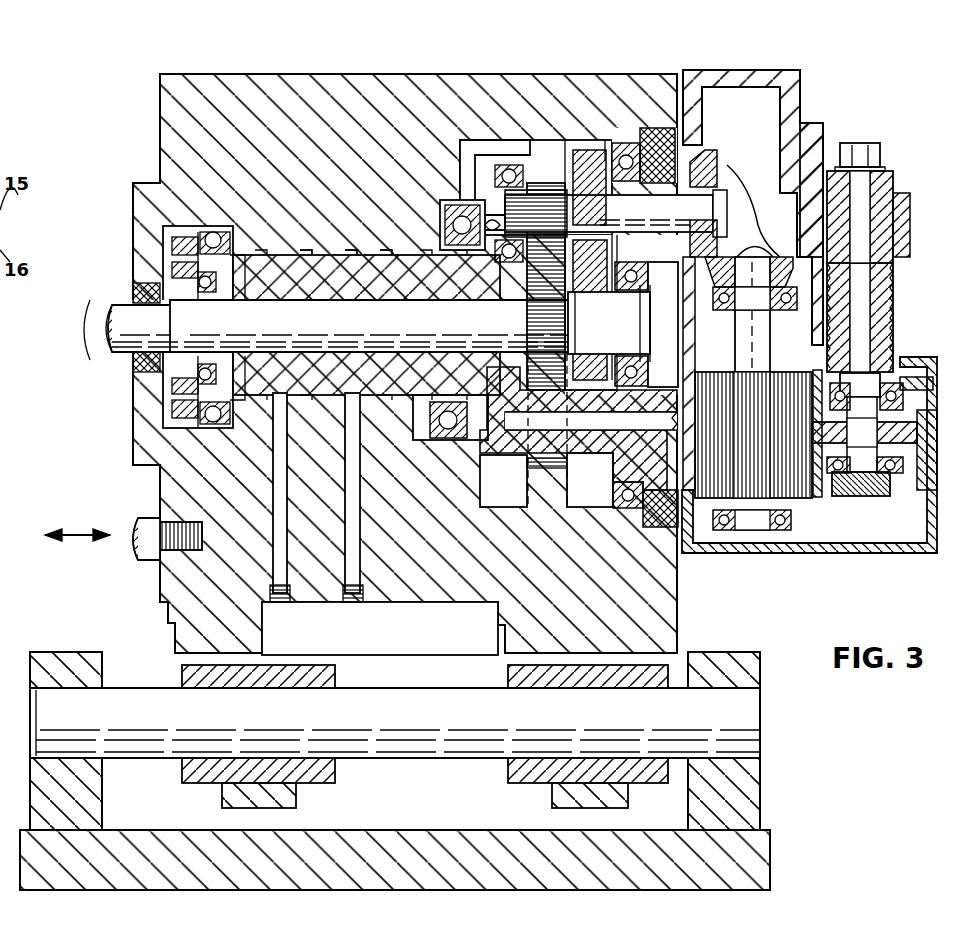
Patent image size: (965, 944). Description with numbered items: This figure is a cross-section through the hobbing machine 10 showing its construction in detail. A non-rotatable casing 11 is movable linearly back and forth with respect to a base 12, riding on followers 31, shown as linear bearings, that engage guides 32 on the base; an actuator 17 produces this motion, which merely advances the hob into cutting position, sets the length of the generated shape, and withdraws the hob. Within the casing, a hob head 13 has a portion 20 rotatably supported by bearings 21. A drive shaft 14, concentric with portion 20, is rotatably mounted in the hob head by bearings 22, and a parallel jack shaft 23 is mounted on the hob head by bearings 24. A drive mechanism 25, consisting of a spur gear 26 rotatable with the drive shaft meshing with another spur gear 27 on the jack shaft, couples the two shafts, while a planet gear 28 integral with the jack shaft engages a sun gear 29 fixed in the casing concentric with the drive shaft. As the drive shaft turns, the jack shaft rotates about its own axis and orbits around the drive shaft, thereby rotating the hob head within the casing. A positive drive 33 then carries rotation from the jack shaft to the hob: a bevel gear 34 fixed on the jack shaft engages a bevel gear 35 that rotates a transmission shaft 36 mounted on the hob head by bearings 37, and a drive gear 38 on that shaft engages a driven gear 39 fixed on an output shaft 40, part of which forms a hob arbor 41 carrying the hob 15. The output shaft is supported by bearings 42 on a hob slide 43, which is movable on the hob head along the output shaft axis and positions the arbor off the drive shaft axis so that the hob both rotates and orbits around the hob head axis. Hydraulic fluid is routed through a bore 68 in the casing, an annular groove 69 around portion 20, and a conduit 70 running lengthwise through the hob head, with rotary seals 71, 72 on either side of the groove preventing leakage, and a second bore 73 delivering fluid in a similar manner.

The hobbing machine 10 is at (252, 68).
The casing 11 is at (160, 130).
The base 12 is at (770, 860).
The hob head 13 is at (800, 70).
The drive shaft 14 is at (120, 352).
The hob 15 is at (895, 305).
The actuator 17 is at (150, 556).
The portion of the hob head 20 is at (512, 460).
The bearings 21 is at (232, 422).
The bearings 22 is at (190, 280).
The jack shaft 23 is at (648, 214).
The bearings 24 is at (478, 180).
The drive mechanism 25 is at (572, 140).
The spur gear 26 is at (640, 324).
The spur gear 27 is at (615, 150).
The planet gear 28 is at (535, 185).
The sun gear 29 is at (568, 463).
The followers 31 is at (310, 783).
The guides 32 is at (462, 760).
The positive drive 33 is at (855, 557).
The bevel gear 34 is at (722, 166).
The bevel gear 35 is at (780, 258).
The transmission shaft 36 is at (770, 360).
The bearings 37 is at (725, 310).
The drive gear 38 is at (795, 490).
The driven gear 39 is at (917, 432).
The output shaft 40 is at (860, 472).
The hob arbor 41 is at (895, 278).
The bearings 42 is at (908, 192).
The hob slide 43 is at (823, 135).
The bore 68 is at (362, 580).
The annular groove 69 is at (352, 258).
The conduit 70 is at (503, 352).
The rotary seal 71 is at (328, 258).
The rotary seal 72 is at (392, 258).
The bore 73 is at (287, 580).